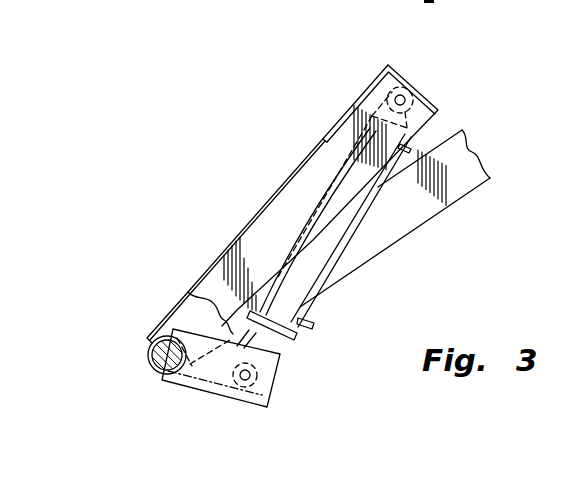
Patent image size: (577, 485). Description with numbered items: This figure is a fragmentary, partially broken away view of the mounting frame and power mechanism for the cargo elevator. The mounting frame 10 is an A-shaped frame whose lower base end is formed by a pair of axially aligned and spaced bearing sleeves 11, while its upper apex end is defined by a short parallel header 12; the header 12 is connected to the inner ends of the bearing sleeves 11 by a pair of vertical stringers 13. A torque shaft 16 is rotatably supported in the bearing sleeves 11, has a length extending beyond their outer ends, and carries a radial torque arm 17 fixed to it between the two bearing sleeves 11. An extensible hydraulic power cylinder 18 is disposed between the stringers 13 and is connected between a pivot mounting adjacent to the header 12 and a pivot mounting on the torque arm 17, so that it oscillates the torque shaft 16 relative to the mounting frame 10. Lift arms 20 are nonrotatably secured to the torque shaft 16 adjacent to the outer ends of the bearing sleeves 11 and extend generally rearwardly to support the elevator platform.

The mounting frame 10 is at (251, 200).
The bearing sleeves 11 is at (150, 356).
The header 12 is at (372, 82).
The vertical stringers 13 is at (186, 305).
The torque shaft 16 is at (158, 338).
The torque arm 17 is at (258, 375).
The extensible hydraulic power cylinder 18 is at (300, 300).
The lift arms 20 is at (463, 177).